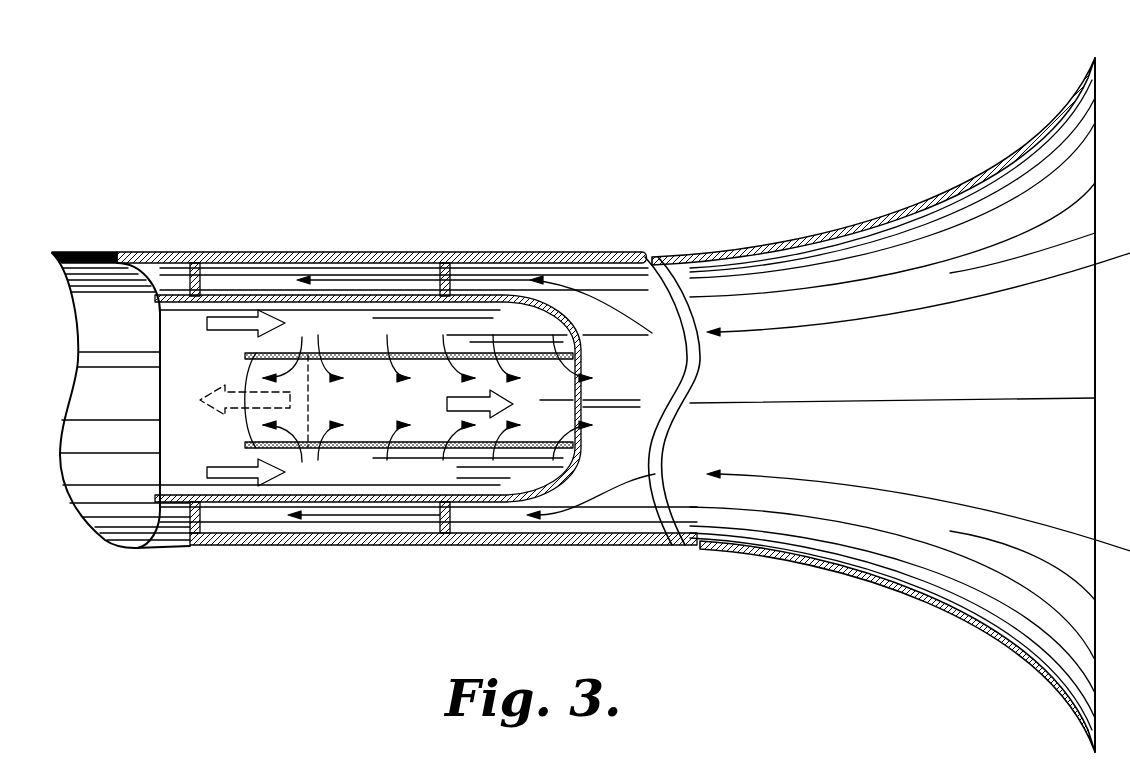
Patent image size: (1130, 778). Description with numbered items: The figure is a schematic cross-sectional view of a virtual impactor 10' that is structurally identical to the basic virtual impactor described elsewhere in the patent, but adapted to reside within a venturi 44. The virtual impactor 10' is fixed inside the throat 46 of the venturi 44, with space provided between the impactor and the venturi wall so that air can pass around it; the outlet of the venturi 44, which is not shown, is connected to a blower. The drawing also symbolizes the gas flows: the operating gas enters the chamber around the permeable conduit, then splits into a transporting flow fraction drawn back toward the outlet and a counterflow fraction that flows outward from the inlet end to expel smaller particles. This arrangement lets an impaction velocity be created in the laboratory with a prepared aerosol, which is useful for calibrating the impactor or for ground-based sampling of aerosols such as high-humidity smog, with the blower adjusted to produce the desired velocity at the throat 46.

The throat 46 is at (297, 256).
The venturi 44 is at (775, 248).
The virtual impactor 10' is at (401, 455).